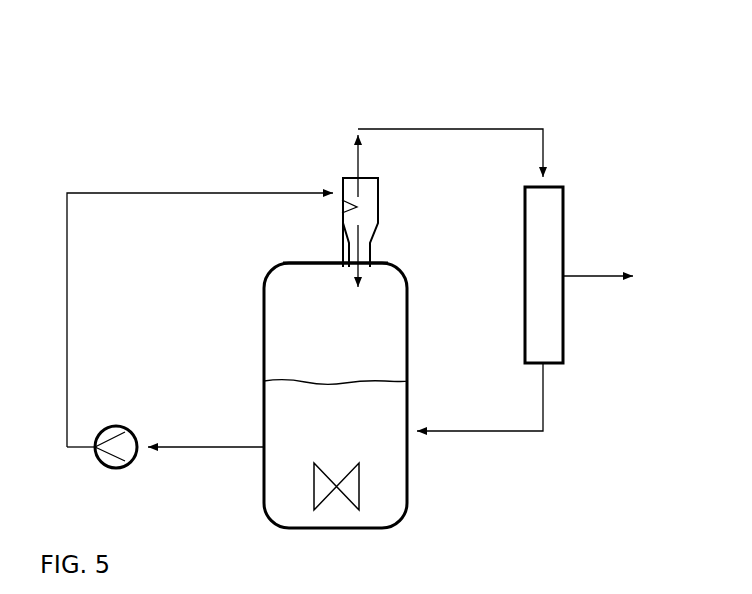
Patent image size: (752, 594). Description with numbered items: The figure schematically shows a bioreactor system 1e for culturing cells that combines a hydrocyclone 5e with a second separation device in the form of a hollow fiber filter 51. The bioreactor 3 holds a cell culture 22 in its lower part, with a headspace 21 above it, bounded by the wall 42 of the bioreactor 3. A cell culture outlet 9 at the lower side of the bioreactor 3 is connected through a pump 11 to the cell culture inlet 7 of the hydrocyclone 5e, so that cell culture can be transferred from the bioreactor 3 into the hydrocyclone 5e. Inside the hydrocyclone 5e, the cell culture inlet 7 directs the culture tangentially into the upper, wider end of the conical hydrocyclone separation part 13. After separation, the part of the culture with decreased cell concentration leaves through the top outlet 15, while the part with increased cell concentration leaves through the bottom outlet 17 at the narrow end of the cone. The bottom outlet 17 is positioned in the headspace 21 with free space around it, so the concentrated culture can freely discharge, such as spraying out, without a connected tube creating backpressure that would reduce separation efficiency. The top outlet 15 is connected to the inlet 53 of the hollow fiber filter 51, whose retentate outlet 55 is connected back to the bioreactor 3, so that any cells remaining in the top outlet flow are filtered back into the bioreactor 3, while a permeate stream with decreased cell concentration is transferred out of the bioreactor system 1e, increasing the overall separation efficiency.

The bioreactor system 1e is at (542, 88).
The bioreactor 3 is at (262, 327).
The wall 42 is at (283, 262).
The headspace 21 is at (316, 341).
The cell culture 22 is at (361, 444).
The hydrocyclone 5e is at (377, 200).
The top outlet 15 is at (353, 175).
The cell culture inlet 7 is at (338, 188).
The hydrocyclone separation part 13 is at (350, 206).
The bottom outlet 17 is at (363, 243).
The inlet 53 is at (543, 183).
The hollow fiber filter 51 is at (563, 213).
The retentate outlet 55 is at (543, 366).
The pump 11 is at (107, 467).
The cell culture outlet 9 is at (262, 447).